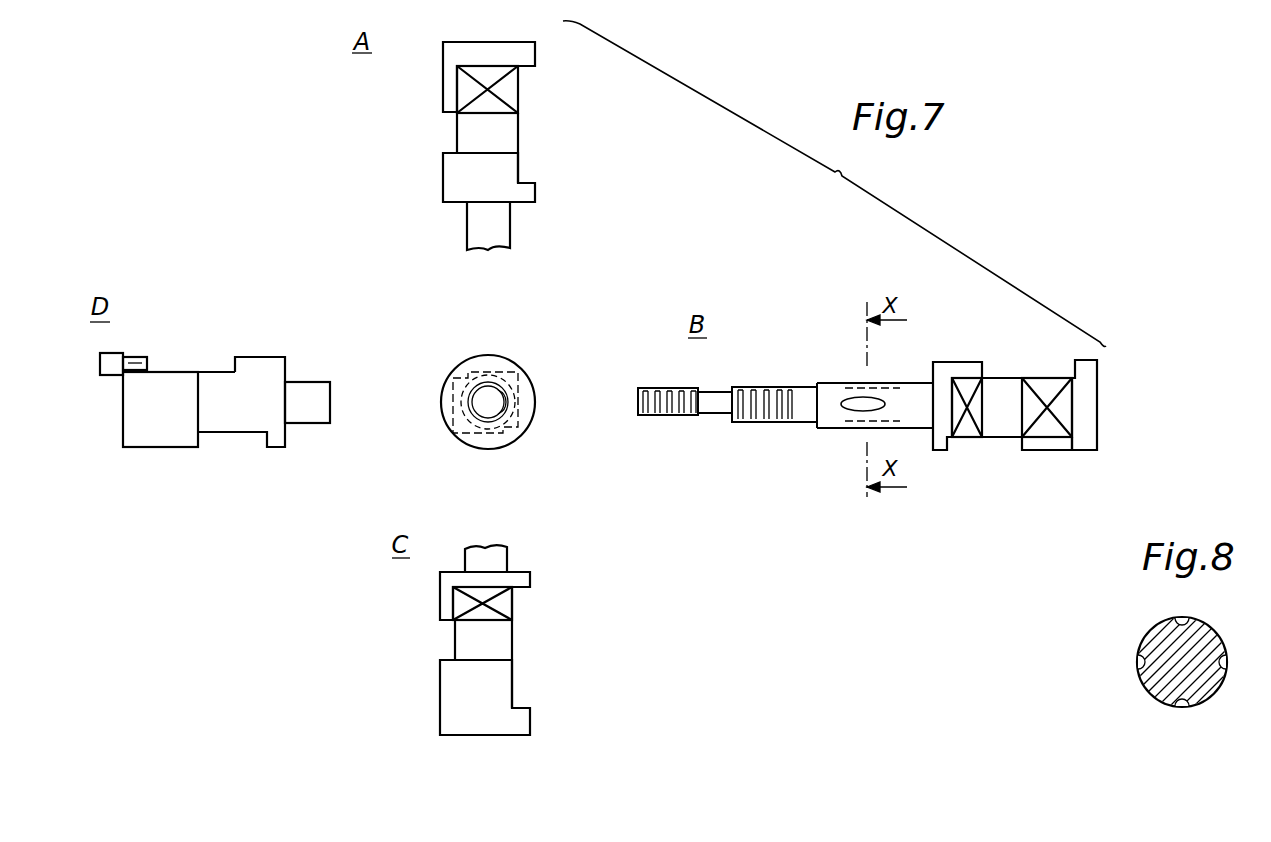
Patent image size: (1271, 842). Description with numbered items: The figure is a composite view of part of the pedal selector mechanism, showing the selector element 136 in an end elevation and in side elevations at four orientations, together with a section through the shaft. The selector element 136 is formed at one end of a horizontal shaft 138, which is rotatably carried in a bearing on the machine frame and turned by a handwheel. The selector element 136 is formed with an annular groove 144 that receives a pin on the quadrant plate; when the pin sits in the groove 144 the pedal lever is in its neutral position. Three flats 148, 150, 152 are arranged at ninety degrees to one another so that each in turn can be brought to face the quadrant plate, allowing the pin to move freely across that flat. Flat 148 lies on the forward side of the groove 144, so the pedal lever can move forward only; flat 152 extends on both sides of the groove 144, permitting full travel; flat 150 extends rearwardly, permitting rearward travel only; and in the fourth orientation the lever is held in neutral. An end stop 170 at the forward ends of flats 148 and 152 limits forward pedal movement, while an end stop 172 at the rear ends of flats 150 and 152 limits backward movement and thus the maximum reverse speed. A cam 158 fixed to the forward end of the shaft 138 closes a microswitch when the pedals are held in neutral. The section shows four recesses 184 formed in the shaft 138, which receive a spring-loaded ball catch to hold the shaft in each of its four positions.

In FIG. 7, the selector element 136 is at (455, 178).
In FIG. 7, the horizontal shaft 138 is at (800, 395).
In FIG. 7, the annular groove 144 is at (465, 131).
In FIG. 7, the flat 148 is at (465, 90).
In FIG. 7, the flat 150 is at (460, 600).
In FIG. 7, the flat 152 is at (518, 100).
In FIG. 7, the cam 158 is at (108, 362).
In FIG. 7, the end stop 170 is at (535, 66).
In FIG. 7, the end stop 172 is at (535, 180).
In FIG. 7, the recesses 184 is at (855, 405).
In FIG. 8, the recesses 184 is at (1215, 607).